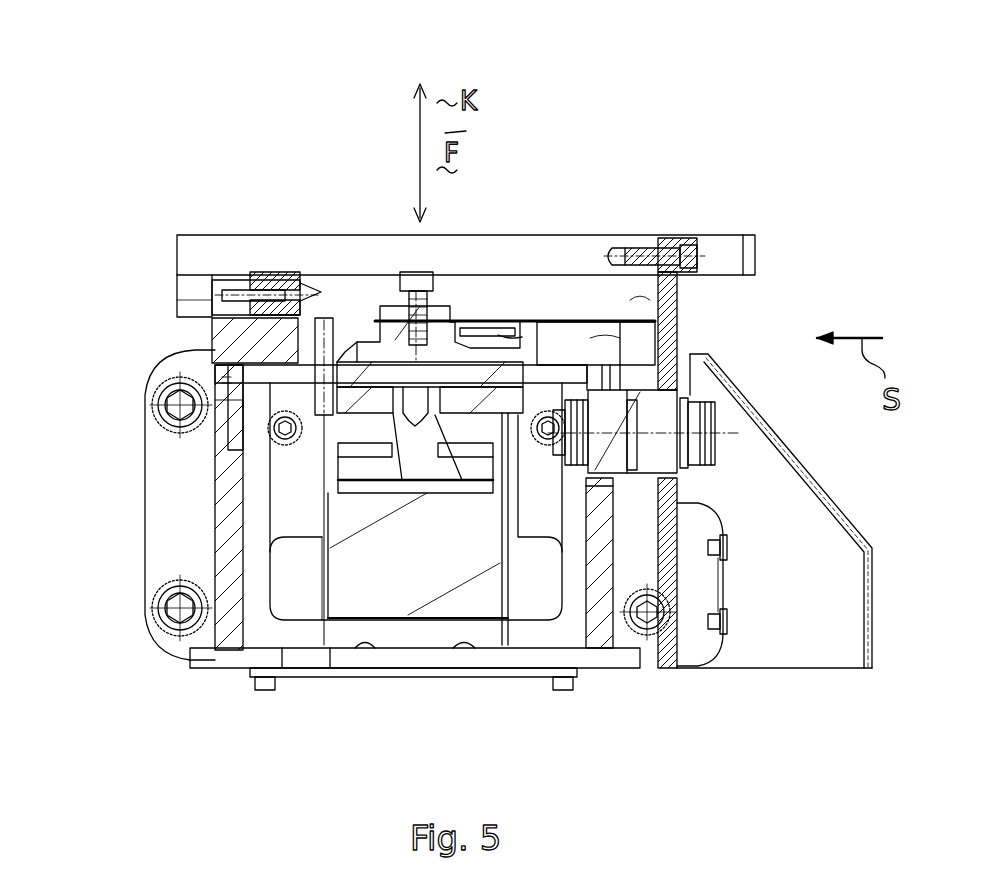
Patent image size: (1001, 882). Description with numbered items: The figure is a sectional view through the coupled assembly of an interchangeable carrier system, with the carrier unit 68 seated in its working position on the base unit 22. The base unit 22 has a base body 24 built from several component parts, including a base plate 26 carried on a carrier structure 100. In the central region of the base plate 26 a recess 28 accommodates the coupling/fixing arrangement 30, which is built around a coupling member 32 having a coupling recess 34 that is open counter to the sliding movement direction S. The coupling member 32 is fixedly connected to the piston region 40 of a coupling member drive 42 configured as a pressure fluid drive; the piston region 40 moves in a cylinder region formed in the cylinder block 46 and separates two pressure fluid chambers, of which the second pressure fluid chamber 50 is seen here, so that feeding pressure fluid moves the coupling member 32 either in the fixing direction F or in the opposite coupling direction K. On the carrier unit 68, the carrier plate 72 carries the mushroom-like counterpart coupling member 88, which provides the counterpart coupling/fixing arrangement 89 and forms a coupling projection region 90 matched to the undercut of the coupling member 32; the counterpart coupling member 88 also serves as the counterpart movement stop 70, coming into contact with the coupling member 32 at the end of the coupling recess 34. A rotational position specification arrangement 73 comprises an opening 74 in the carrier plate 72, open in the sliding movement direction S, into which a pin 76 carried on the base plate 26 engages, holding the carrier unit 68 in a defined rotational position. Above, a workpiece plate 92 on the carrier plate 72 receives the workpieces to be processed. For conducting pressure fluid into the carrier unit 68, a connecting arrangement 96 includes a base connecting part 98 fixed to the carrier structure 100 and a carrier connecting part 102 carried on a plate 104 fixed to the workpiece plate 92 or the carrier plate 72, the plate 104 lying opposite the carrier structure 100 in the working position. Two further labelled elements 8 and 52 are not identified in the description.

The clamping device 8 is at (715, 100).
The base unit 22 is at (302, 727).
The base body 24 is at (195, 378).
The base plate 26 is at (706, 356).
The recess 28 is at (600, 347).
The coupling/fixing arrangement 30 is at (366, 228).
The coupling member 32 is at (300, 343).
The coupling recess 34 is at (697, 238).
The piston region 40 is at (353, 467).
The coupling member drive 42 is at (195, 652).
The cylinder block 46 is at (506, 622).
The second pressure fluid chamber 50 is at (307, 525).
The stop block 52 is at (350, 448).
The carrier unit 68 is at (715, 200).
The counterpart movement stop 70 is at (430, 268).
The carrier plate 72 is at (520, 345).
The rotational position specification arrangement 73 is at (248, 232).
The opening 74 is at (317, 228).
The pin 76 is at (267, 228).
The counterpart coupling member 88 is at (500, 337).
The counterpart coupling/fixing arrangement 89 is at (448, 290).
The coupling projection region 90 is at (538, 300).
The workpiece plate 92 is at (182, 232).
The connecting arrangement 96 is at (703, 483).
The base connecting part 98 is at (622, 475).
The carrier structure 100 is at (598, 633).
The carrier connecting part 102 is at (688, 447).
The plate 104 is at (682, 628).